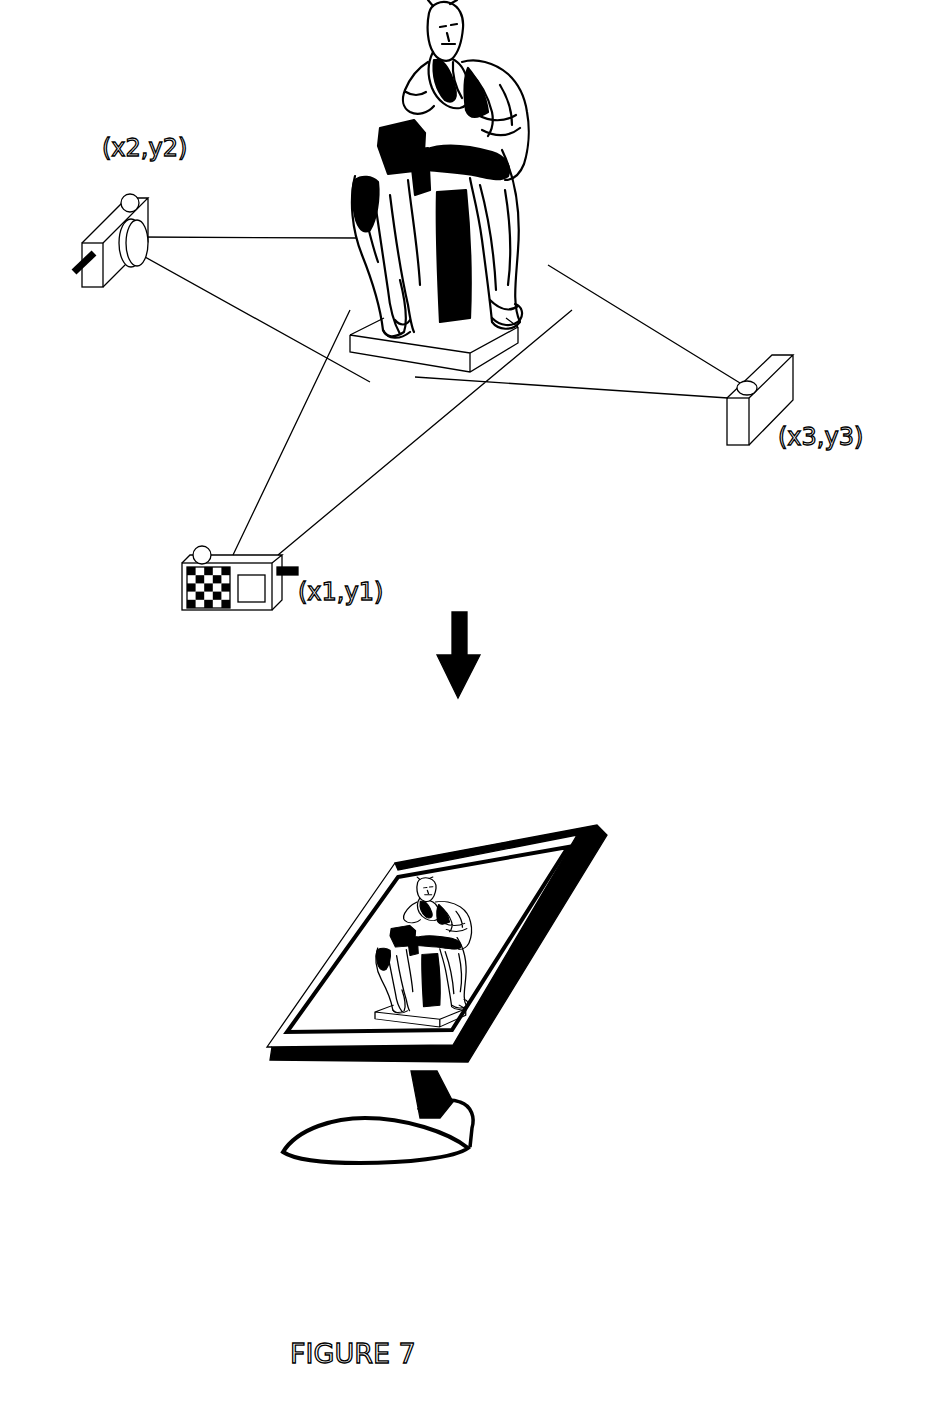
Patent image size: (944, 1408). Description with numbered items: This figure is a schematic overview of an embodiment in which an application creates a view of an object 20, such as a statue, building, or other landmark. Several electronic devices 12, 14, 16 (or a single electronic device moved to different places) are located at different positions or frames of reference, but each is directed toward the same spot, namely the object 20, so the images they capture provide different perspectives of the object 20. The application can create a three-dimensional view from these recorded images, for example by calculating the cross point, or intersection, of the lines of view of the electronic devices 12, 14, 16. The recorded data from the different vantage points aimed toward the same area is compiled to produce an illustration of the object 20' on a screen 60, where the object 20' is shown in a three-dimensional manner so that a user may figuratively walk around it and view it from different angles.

The electronic device 12 is at (187, 577).
The electronic device 14 is at (92, 282).
The electronic device 16 is at (778, 362).
The object 20 is at (475, 186).
The object 20' is at (373, 925).
The screen 60 is at (502, 902).